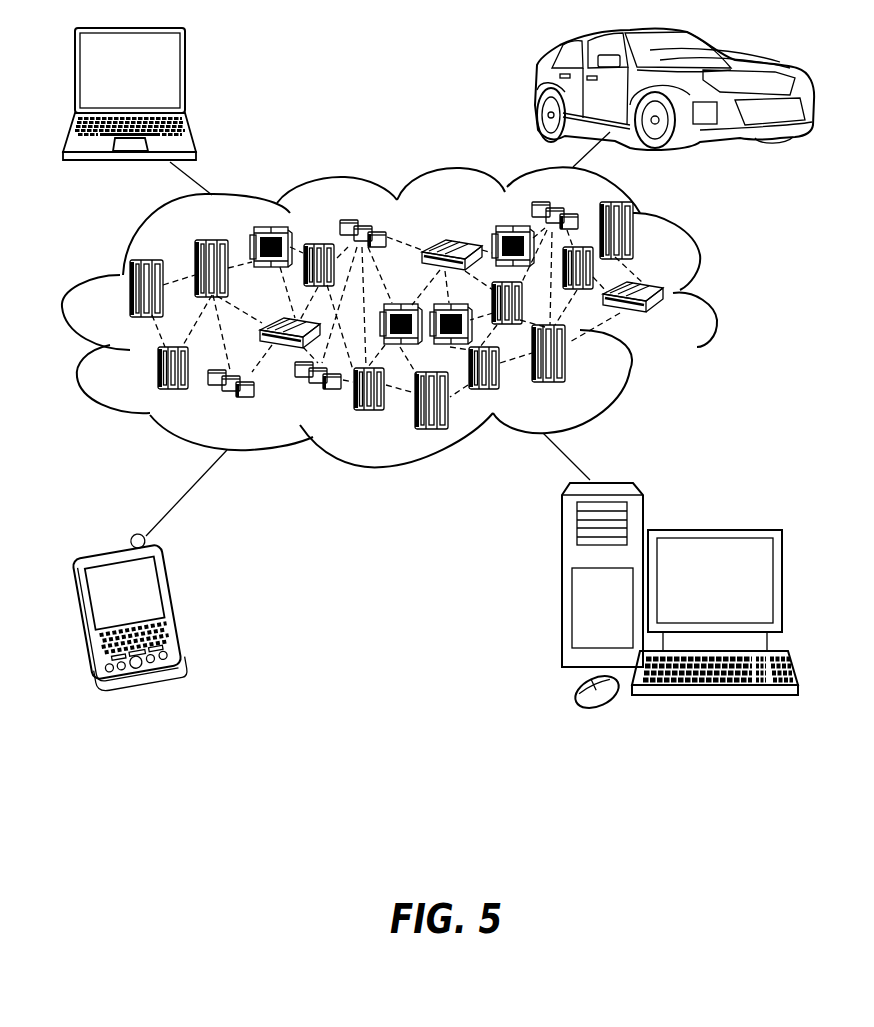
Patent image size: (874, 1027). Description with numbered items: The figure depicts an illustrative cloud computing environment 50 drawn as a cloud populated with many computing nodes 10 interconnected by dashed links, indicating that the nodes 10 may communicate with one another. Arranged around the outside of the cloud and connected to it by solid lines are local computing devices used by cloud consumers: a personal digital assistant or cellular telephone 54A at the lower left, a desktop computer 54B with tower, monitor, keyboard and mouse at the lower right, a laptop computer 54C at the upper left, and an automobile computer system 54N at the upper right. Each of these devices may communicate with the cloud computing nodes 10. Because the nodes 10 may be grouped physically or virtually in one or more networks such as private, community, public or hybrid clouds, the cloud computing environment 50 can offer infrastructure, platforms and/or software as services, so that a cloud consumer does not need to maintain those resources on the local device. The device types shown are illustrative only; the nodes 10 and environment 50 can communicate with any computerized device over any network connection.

The cloud computing node 10 is at (668, 326).
The cloud computing environment 50 is at (713, 297).
The personal digital assistant (PDA) or cellular telephone 54A is at (177, 603).
The desktop computer 54B is at (712, 529).
The laptop computer 54C is at (186, 77).
The automobile computer system 54N is at (536, 88).